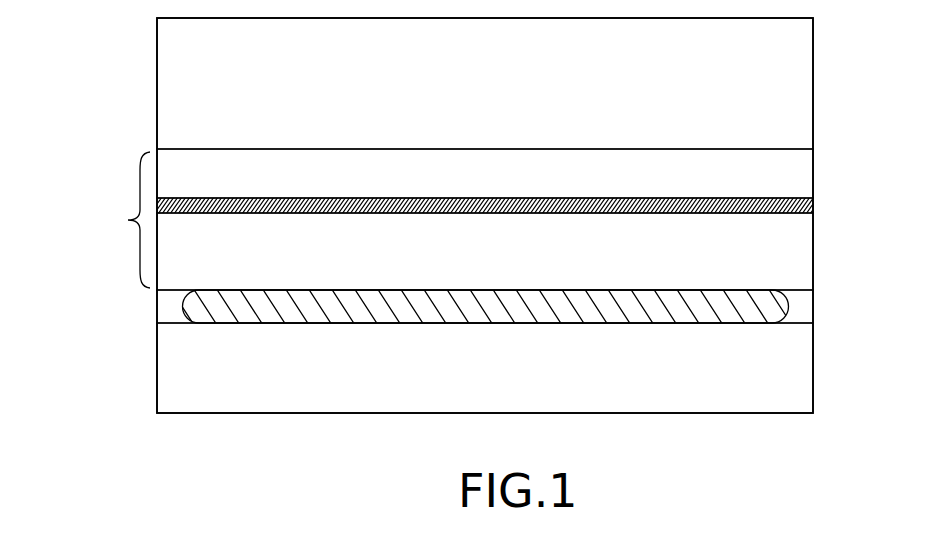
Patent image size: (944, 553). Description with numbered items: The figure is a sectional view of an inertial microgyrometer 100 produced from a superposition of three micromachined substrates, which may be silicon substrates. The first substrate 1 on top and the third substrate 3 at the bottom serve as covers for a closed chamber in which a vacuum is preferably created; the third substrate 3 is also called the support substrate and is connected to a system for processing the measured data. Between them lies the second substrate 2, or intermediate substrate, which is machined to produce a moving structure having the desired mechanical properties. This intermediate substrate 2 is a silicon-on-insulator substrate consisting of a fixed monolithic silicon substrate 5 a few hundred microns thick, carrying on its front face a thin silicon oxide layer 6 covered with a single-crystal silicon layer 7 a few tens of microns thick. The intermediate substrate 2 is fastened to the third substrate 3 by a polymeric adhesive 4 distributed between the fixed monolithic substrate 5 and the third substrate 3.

The inertial microgyrometer 100 is at (108, 85).
The first substrate 1 is at (813, 85).
The second substrate 2 is at (125, 220).
The third substrate 3 is at (813, 366).
The polymeric adhesive 4 is at (788, 307).
The fixed monolithic silicon substrate 5 is at (813, 246).
The silicon oxide layer 6 is at (813, 206).
The single-crystal silicon layer 7 is at (813, 176).